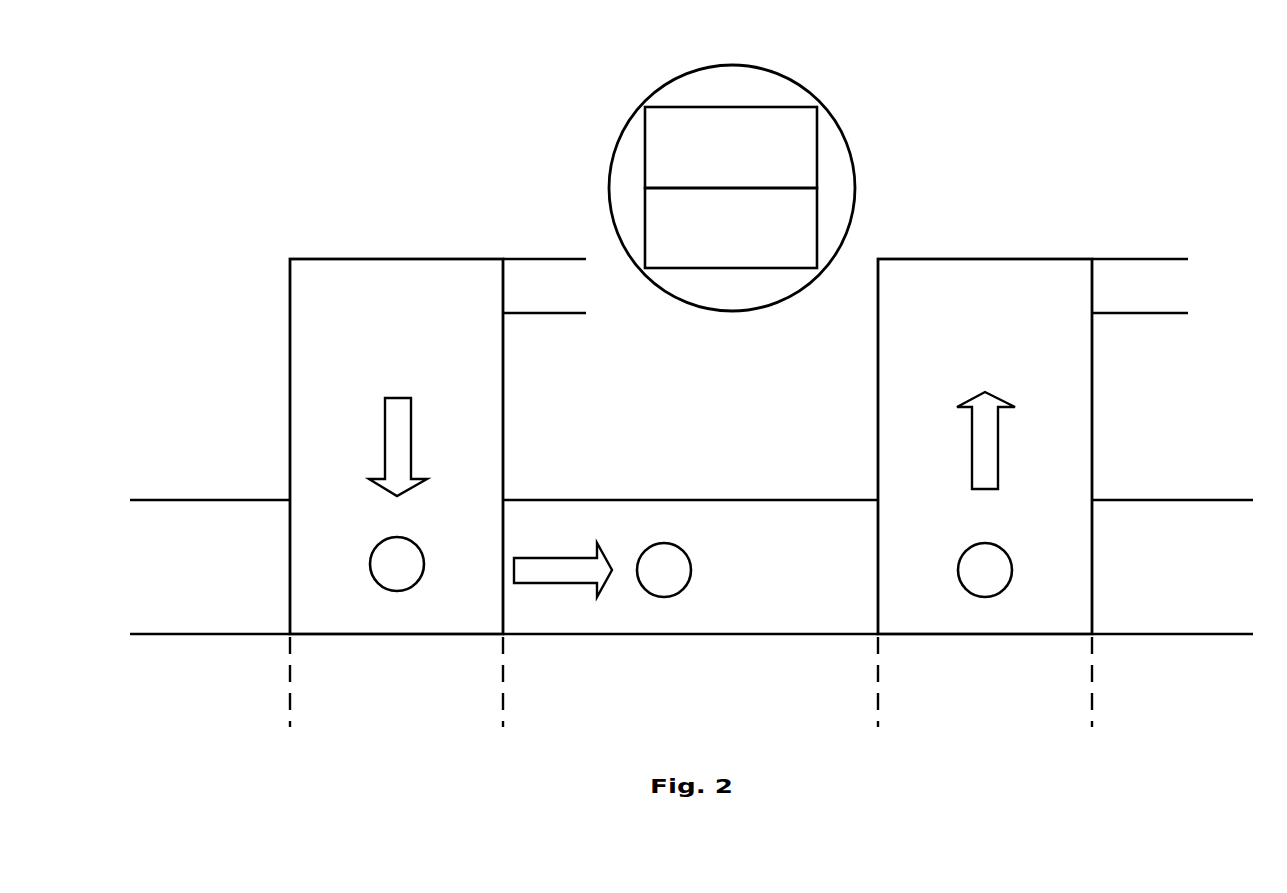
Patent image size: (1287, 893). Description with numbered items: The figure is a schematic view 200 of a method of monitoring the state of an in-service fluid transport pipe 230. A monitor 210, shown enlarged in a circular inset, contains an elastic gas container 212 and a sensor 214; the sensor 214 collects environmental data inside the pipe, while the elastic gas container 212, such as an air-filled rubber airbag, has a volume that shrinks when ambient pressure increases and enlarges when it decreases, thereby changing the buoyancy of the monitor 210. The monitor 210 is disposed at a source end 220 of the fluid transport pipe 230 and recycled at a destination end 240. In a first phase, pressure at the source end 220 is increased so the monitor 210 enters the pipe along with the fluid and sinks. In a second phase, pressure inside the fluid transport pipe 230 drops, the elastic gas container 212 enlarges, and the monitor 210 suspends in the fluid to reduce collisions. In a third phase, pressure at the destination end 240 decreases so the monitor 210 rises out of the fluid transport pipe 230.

The schematic view 200 is at (318, 82).
The monitor 210 is at (610, 100).
The elastic gas container 212 is at (745, 185).
The sensor 214 is at (745, 251).
The source end 220 is at (412, 348).
The fluid transport pipe 230 is at (818, 625).
The destination end 240 is at (1000, 348).